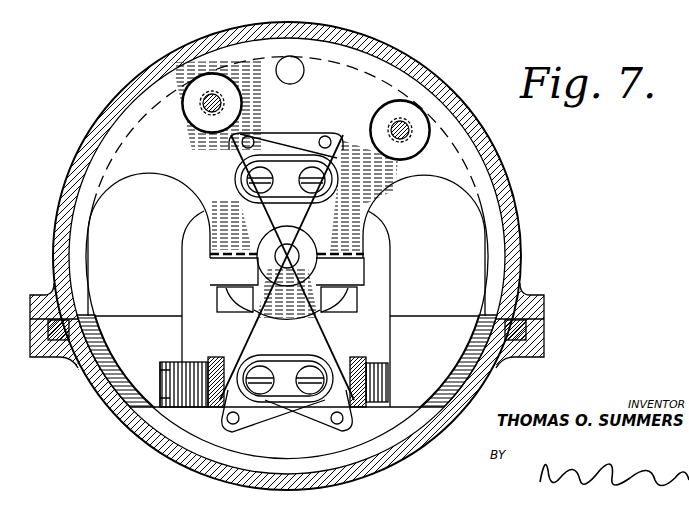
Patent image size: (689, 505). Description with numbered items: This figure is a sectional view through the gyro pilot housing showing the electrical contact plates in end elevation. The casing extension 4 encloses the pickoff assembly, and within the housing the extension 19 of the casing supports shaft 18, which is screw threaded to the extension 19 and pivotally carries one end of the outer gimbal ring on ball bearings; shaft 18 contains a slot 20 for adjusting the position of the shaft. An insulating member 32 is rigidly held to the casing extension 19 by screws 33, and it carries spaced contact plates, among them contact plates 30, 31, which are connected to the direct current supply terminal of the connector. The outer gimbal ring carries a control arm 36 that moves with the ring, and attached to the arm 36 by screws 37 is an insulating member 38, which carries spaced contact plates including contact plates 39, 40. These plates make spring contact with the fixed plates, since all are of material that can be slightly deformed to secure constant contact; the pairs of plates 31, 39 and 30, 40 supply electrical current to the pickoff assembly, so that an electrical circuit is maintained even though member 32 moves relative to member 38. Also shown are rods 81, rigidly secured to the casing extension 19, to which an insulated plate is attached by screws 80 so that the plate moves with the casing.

The casing extension 4 is at (433, 80).
The shaft 18 is at (323, 268).
The extension 19 is at (172, 168).
The slot 20 is at (292, 250).
The contact plate 30 is at (307, 137).
The contact plate 31 is at (263, 229).
The insulating member 32 is at (297, 196).
The screws 33 is at (255, 186).
The control arm 36 is at (350, 404).
The screws 37 is at (268, 408).
The insulating member 38 is at (285, 367).
The contact plate 39 is at (313, 334).
The contact plate 40 is at (233, 428).
The screws 80 is at (207, 107).
The rods 81 is at (243, 100).